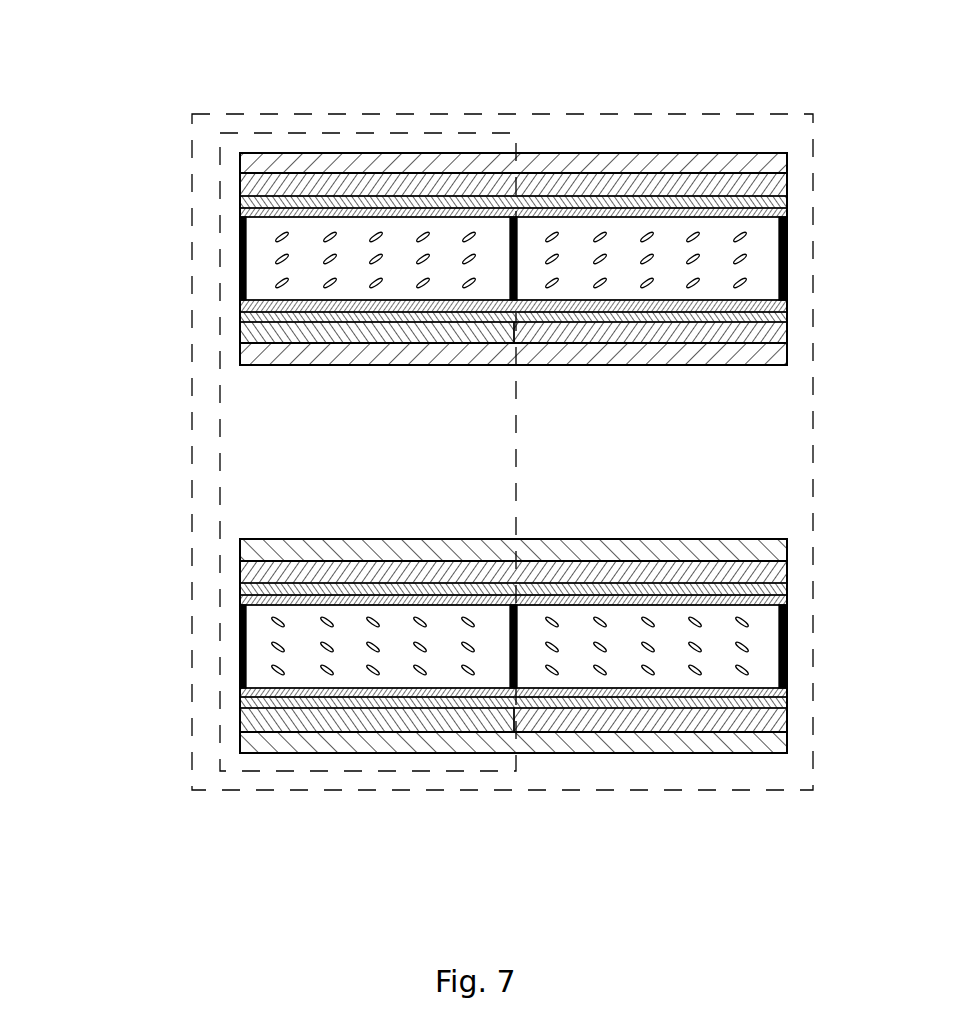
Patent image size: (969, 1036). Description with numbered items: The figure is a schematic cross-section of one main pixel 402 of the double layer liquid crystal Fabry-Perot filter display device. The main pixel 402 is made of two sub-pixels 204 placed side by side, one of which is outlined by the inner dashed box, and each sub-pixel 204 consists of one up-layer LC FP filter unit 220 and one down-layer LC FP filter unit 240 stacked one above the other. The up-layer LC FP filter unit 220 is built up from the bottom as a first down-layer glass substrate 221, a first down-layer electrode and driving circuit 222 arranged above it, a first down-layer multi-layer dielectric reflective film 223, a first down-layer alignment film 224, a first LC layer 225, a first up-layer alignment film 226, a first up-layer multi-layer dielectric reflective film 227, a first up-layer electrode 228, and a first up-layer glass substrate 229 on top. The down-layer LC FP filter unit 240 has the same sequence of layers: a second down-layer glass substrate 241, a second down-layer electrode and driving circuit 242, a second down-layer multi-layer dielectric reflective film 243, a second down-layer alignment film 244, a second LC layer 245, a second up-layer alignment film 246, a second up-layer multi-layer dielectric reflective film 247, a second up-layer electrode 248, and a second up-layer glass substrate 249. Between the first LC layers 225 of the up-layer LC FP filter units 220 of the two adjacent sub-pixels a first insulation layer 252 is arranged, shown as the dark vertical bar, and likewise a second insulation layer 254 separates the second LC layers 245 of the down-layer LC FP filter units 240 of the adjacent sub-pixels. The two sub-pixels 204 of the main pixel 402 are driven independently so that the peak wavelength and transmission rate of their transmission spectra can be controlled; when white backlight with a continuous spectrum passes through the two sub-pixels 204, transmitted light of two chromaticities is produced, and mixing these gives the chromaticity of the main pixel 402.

The sub-pixel 204 is at (367, 133).
The main pixel 402 is at (623, 114).
The up-layer LC FP filter unit 220 is at (108, 120).
The first down-layer glass substrate 221 is at (240, 350).
The first down-layer electrode and driving circuit 222 is at (240, 333).
The first down-layer multi-layer dielectric reflective film 223 is at (240, 317).
The first down-layer alignment film 224 is at (240, 306).
The first LC layer 225 is at (270, 277).
The first up-layer alignment film 226 is at (240, 212).
The first up-layer multi-layer dielectric reflective film 227 is at (240, 203).
The first up-layer electrode 228 is at (240, 187).
The first up-layer glass substrate 229 is at (240, 160).
The down-layer LC FP filter unit 240 is at (107, 497).
The second down-layer glass substrate 241 is at (240, 738).
The second down-layer electrode and driving circuit 242 is at (240, 718).
The second down-layer multi-layer dielectric reflective film 243 is at (240, 702).
The second down-layer alignment film 244 is at (240, 693).
The second LC layer 245 is at (273, 668).
The second up-layer alignment film 246 is at (240, 600).
The second up-layer multi-layer dielectric reflective film 247 is at (240, 588).
The second up-layer electrode 248 is at (240, 568).
The second up-layer glass substrate 249 is at (240, 548).
The first insulation layer 252 is at (788, 264).
The second insulation layer 254 is at (788, 657).